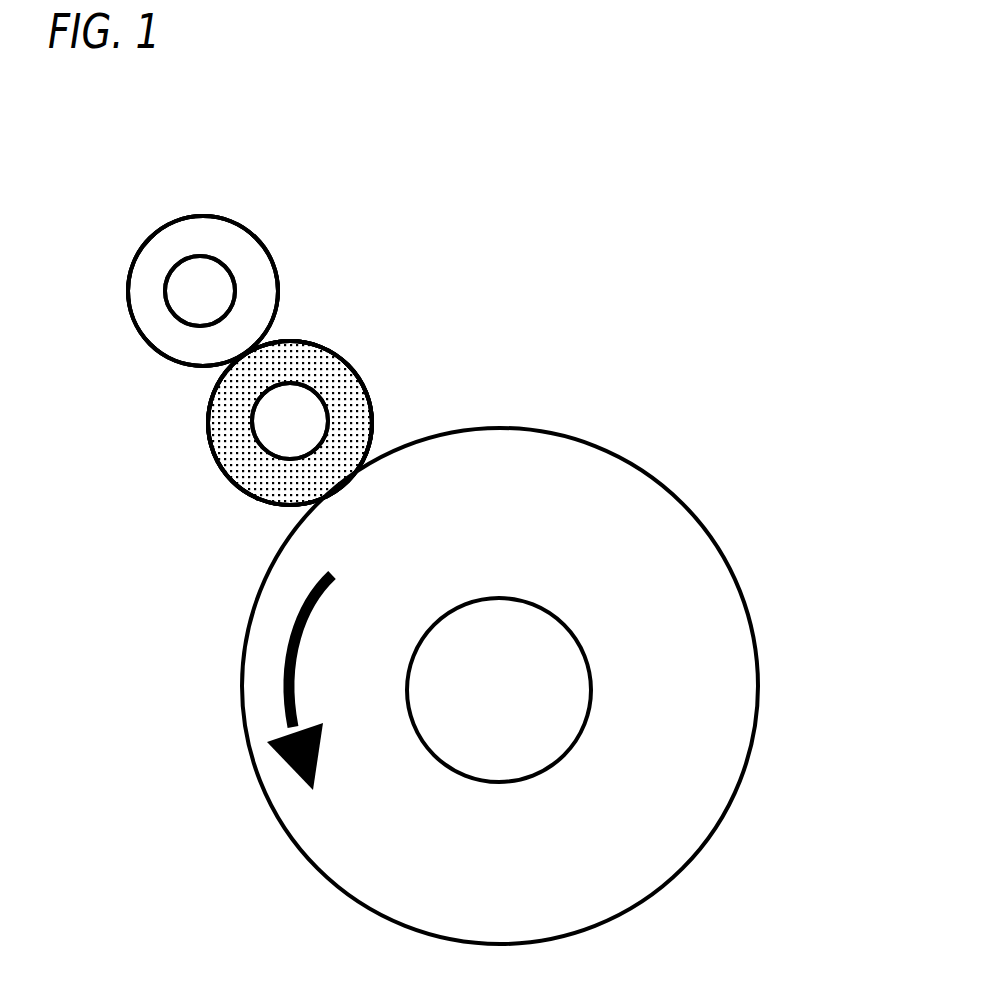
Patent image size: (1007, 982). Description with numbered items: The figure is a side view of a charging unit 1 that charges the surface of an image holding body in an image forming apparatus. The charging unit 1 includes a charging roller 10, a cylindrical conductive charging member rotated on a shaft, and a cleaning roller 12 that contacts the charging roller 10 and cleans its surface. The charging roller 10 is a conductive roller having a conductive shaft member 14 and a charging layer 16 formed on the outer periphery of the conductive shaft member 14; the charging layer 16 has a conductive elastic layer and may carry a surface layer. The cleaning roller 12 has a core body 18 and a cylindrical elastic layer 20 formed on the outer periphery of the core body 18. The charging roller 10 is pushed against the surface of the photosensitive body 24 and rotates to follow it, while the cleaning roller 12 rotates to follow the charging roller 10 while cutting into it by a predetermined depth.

The charging unit 1 is at (355, 248).
The charging roller 10 is at (352, 348).
The cleaning roller 12 is at (264, 216).
The conductive shaft member 14 is at (280, 425).
The charging layer 16 is at (222, 410).
The core body 18 is at (185, 293).
The cylindrical elastic layer 20 is at (165, 243).
The photosensitive body 24 is at (645, 472).